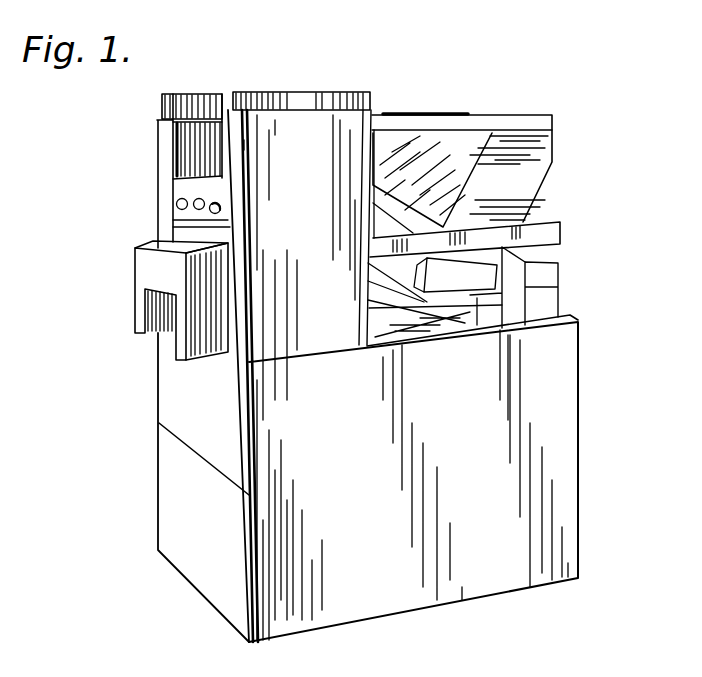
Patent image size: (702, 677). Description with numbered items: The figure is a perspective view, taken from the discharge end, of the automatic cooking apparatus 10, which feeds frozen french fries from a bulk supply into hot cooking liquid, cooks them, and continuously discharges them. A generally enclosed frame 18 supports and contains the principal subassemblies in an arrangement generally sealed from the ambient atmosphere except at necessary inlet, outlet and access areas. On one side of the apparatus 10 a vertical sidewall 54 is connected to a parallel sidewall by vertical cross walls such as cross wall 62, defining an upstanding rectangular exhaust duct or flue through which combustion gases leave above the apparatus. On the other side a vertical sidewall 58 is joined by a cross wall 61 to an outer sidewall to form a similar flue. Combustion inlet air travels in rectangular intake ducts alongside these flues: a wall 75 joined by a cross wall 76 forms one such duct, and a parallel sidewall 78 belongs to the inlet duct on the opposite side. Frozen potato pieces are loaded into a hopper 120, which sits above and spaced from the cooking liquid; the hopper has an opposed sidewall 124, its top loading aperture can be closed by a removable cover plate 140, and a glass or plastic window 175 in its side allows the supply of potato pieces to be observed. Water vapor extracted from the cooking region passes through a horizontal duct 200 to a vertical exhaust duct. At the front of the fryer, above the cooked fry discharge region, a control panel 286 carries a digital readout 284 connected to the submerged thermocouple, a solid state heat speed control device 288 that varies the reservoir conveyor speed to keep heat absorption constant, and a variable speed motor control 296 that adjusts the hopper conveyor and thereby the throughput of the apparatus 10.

The automatic cooking apparatus 10 is at (136, 397).
The frame 18 is at (582, 521).
The vertical sidewall 54 is at (284, 92).
The vertical sidewall 58 is at (187, 91).
The vertical cross wall 61 is at (164, 106).
The vertical cross wall 62 is at (233, 92).
The wall 75 is at (313, 130).
The cross wall 76 is at (238, 139).
The sidewall 78 is at (177, 135).
The hopper 120 is at (542, 112).
The hopper sidewall 124 is at (538, 150).
The cover plate 140 is at (433, 113).
The window 175 is at (457, 177).
The horizontal duct 200 is at (556, 240).
The digital readout 284 is at (177, 199).
The control panel 286 is at (183, 219).
The heat speed control device 288 is at (205, 200).
The variable speed motor control 296 is at (216, 210).